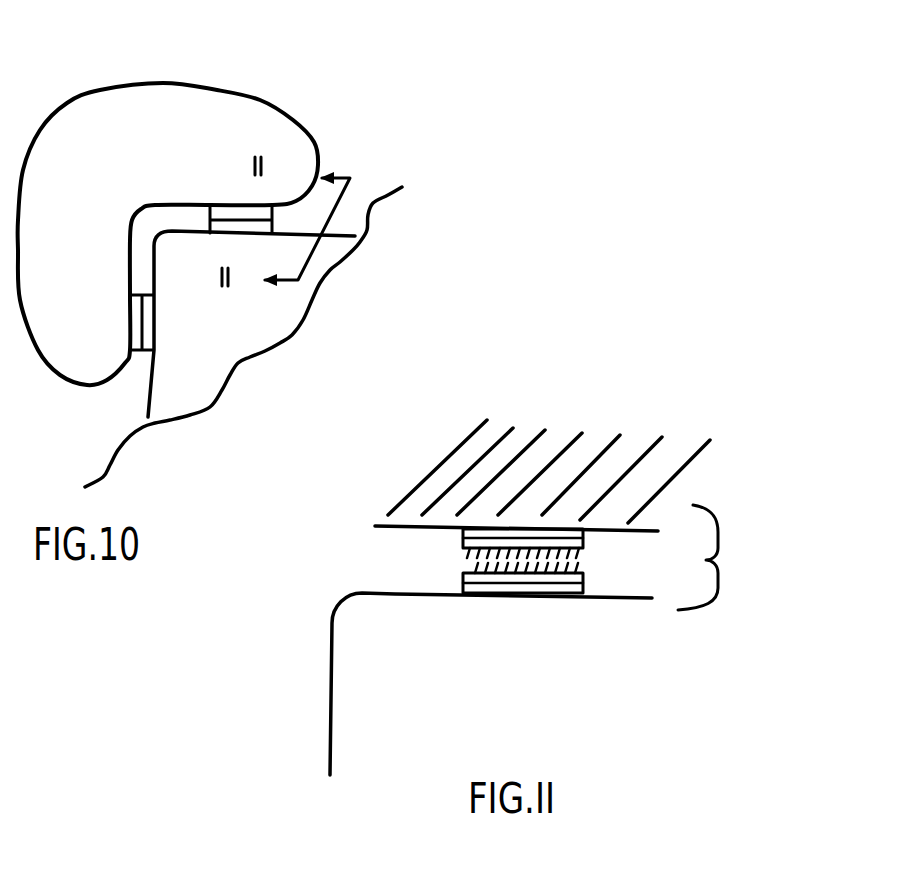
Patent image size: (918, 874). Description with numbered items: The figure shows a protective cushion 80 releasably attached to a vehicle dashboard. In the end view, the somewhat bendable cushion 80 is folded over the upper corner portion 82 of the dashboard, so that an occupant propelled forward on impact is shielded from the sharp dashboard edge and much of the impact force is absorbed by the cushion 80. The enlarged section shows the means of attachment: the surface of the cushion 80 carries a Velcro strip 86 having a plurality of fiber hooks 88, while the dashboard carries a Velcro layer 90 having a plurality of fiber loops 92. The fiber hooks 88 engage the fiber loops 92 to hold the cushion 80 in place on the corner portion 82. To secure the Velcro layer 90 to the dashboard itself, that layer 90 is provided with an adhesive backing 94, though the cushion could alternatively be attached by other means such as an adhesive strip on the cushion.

In FIG. 10, the cushion 80 is at (107, 117).
In FIG. 11, the cushion 80 is at (460, 465).
In FIG. 10, the upper corner portion 82 is at (170, 242).
In FIG. 11, the Velcro strip 86 is at (583, 543).
In FIG. 11, the fiber hooks 88 is at (468, 553).
In FIG. 11, the Velcro layer 90 is at (583, 575).
In FIG. 11, the fiber loops 92 is at (475, 562).
In FIG. 11, the adhesive backing 94 is at (553, 592).